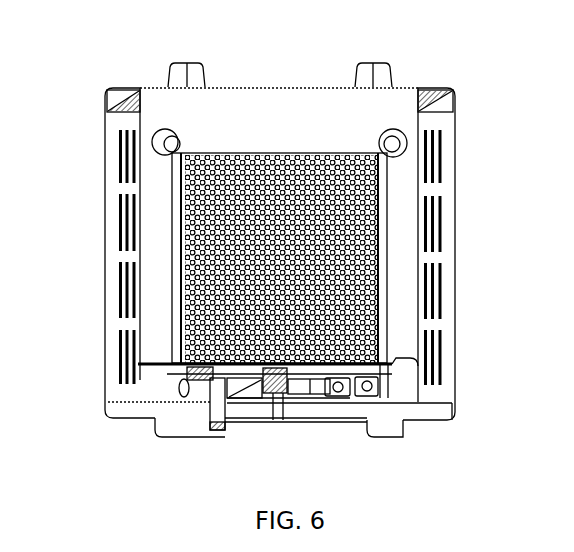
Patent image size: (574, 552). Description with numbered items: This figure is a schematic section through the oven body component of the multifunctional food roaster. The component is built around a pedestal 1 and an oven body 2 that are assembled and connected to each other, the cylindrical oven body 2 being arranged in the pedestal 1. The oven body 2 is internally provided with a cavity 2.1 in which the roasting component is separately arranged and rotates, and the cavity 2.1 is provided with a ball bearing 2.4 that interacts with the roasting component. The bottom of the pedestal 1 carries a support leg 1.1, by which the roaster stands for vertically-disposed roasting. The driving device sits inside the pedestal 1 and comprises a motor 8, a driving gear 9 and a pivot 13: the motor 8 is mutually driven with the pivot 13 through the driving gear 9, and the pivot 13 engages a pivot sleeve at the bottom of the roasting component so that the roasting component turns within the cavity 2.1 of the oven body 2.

The pedestal 1 is at (110, 416).
The support leg 1.1 is at (407, 437).
The oven body 2 is at (448, 257).
The cavity 2.1 is at (410, 115).
The ball bearing 2.4 is at (162, 130).
The motor 8 is at (333, 420).
The driving gear 9 is at (265, 400).
The pivot 13 is at (223, 423).